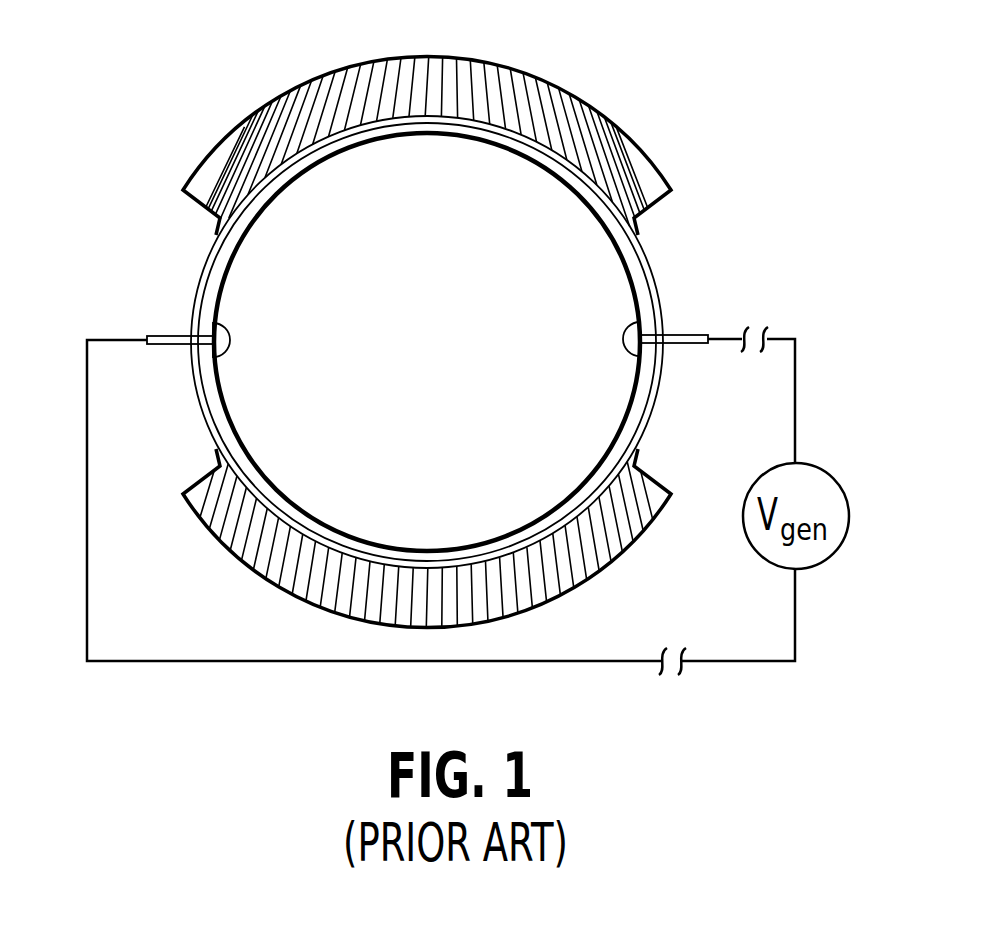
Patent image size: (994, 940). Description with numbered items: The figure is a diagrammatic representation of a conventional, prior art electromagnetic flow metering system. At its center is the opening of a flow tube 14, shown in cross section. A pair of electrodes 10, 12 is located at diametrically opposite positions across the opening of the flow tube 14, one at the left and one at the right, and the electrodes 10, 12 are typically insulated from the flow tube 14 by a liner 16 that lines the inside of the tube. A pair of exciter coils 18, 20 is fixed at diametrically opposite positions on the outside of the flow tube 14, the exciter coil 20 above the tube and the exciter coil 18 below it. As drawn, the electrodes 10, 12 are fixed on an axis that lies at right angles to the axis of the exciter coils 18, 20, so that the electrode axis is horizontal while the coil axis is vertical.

The electrode 10 is at (230, 347).
The electrode 12 is at (636, 345).
The flow tube 14 is at (650, 252).
The liner 16 is at (510, 140).
The exciter coil 18 is at (252, 572).
The exciter coil 20 is at (613, 123).